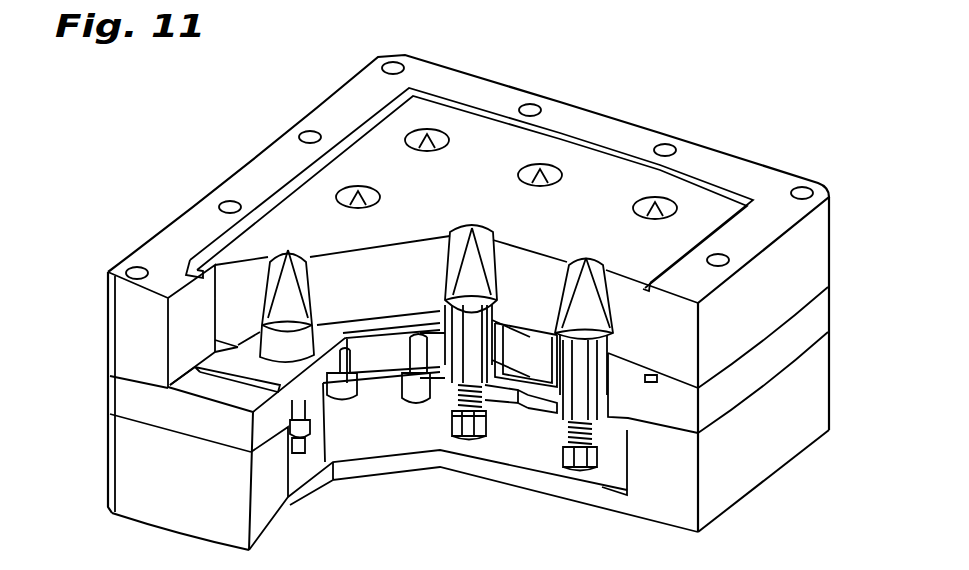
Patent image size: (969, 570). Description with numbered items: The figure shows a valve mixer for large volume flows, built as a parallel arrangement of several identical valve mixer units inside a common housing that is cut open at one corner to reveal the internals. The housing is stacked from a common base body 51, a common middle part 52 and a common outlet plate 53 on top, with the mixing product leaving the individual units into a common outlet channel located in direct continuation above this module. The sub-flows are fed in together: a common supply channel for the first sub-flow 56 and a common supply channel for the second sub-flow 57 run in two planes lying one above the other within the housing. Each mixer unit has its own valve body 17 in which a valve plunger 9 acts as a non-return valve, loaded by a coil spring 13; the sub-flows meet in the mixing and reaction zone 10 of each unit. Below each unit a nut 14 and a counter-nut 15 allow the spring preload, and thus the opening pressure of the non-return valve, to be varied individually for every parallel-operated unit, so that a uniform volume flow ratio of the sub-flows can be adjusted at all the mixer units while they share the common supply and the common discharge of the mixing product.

The common outlet plate 53 is at (305, 193).
The common supply channel for first sub-flow 56 is at (217, 350).
The common middle part 52 is at (152, 393).
The common base body 51 is at (143, 449).
The common supply channel for second sub-flow 57 is at (362, 423).
The valve body 17 is at (443, 380).
The coil spring 13 is at (480, 420).
The valve plunger 9 is at (480, 388).
The mixing and reaction zone 10 is at (576, 262).
The nut 14 is at (597, 463).
The counter-nut 15 is at (587, 467).